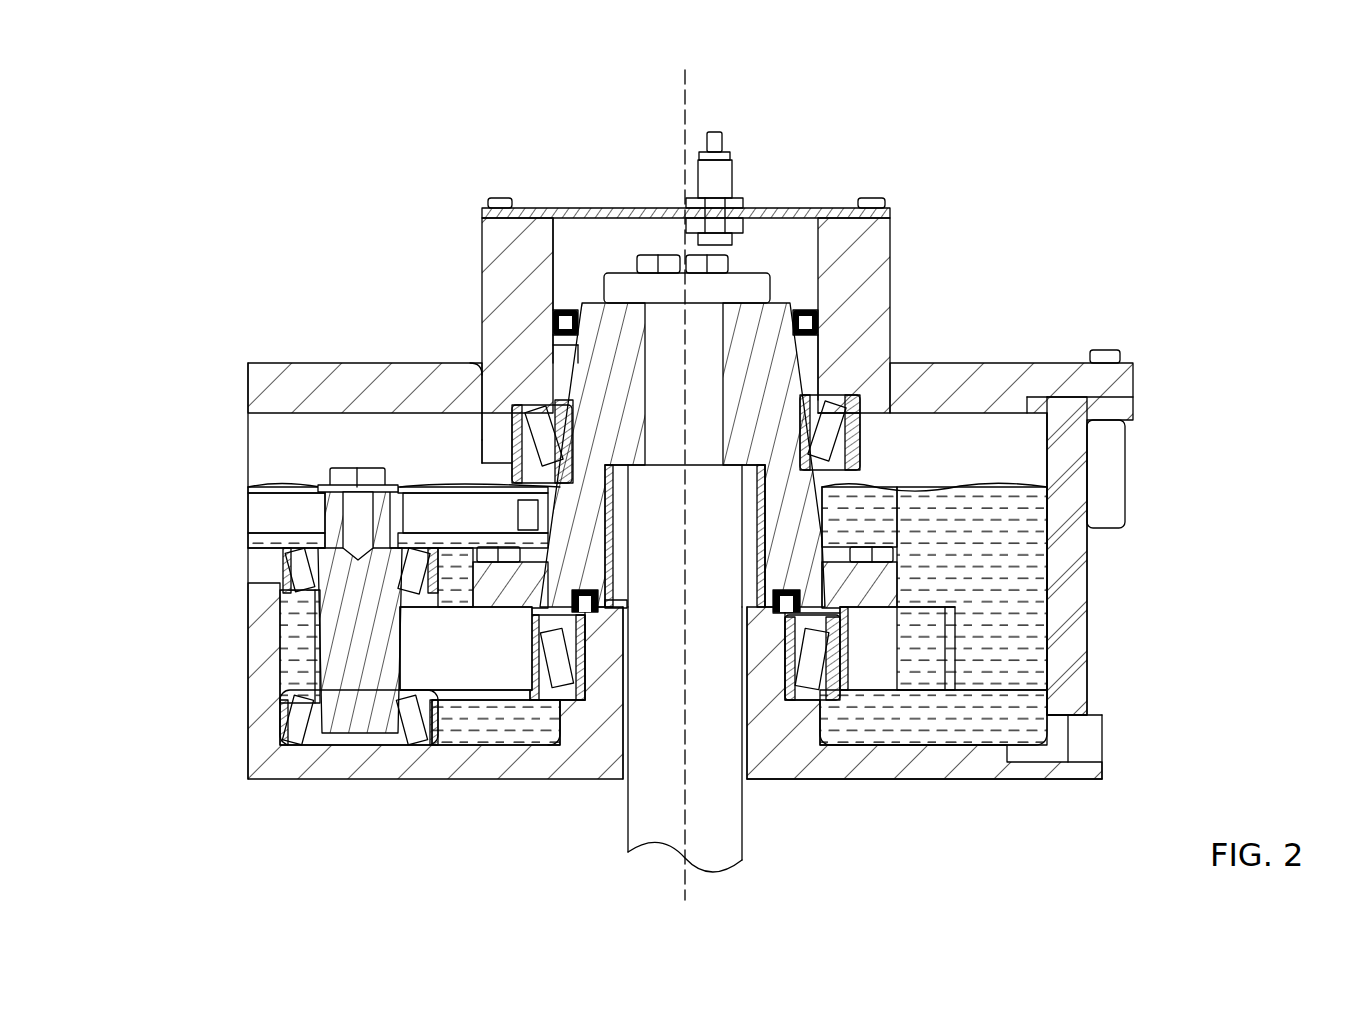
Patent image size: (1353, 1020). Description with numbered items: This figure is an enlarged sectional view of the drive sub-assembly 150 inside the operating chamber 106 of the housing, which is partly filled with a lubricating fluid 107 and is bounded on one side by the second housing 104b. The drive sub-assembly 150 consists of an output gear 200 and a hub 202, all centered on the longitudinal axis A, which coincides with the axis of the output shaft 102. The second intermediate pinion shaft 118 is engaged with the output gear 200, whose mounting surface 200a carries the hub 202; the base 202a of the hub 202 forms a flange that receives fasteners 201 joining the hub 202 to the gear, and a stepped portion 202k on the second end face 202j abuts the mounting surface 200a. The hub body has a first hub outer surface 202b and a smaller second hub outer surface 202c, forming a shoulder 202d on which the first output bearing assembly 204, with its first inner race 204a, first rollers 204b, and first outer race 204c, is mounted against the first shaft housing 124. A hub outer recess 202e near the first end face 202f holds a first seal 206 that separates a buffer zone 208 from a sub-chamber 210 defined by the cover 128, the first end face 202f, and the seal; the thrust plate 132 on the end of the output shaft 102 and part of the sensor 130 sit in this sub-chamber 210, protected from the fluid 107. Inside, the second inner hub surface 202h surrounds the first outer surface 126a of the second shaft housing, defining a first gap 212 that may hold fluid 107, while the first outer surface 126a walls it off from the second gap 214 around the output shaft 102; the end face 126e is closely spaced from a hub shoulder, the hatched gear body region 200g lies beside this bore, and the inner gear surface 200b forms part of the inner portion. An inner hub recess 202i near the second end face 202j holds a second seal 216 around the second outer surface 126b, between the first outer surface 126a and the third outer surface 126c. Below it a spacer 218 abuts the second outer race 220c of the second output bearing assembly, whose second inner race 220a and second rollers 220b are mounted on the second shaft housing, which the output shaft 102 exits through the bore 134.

The output shaft 102 is at (743, 843).
The second housing 104b is at (1087, 598).
The operating chamber 106 is at (280, 436).
The fluid 107 is at (1020, 682).
The second intermediate pinion shaft 118 is at (313, 643).
The first shaft housing 124 is at (482, 232).
The first outer surface 126a is at (610, 513).
The second outer surface 126b is at (592, 597).
The third outer surface 126c is at (566, 622).
The end face 126e is at (848, 437).
The cover 128 is at (842, 210).
The sensor 130 is at (732, 157).
The thrust plate 132 is at (617, 273).
The bore 134 is at (623, 779).
The drive sub-assembly 150 is at (960, 588).
The output gear 200 is at (447, 707).
The mounting surface 200a is at (300, 566).
The inner gear surface 200b is at (533, 645).
The gear hub 200g is at (726, 403).
The fasteners 201 is at (878, 543).
The hub 202 is at (832, 507).
The base 202a is at (472, 571).
The first hub outer surface 202b is at (548, 477).
The second hub outer surface 202c is at (548, 327).
The shoulder 202d is at (510, 437).
The hub outer recess 202e is at (596, 290).
The first end face 202f is at (790, 308).
The second inner hub surface 202h is at (755, 494).
The inner hub recess 202i is at (825, 533).
The second end face 202j is at (915, 603).
The stepped portion 202k is at (846, 621).
The first output bearing assembly 204 is at (916, 354).
The first inner race 204a is at (818, 397).
The first rollers 204b is at (833, 413).
The first outer race 204c is at (850, 430).
The first seal 206 is at (552, 315).
The buffer zone 208 is at (550, 358).
The sub-chamber 210 is at (653, 281).
The first gap 212 is at (763, 580).
The second gap 214 is at (744, 520).
The second seal 216 is at (868, 571).
The spacer 218 is at (882, 613).
The second inner race 220a is at (810, 740).
The second rollers 220b is at (815, 674).
The second outer race 220c is at (840, 665).
The longitudinal axis A is at (688, 88).